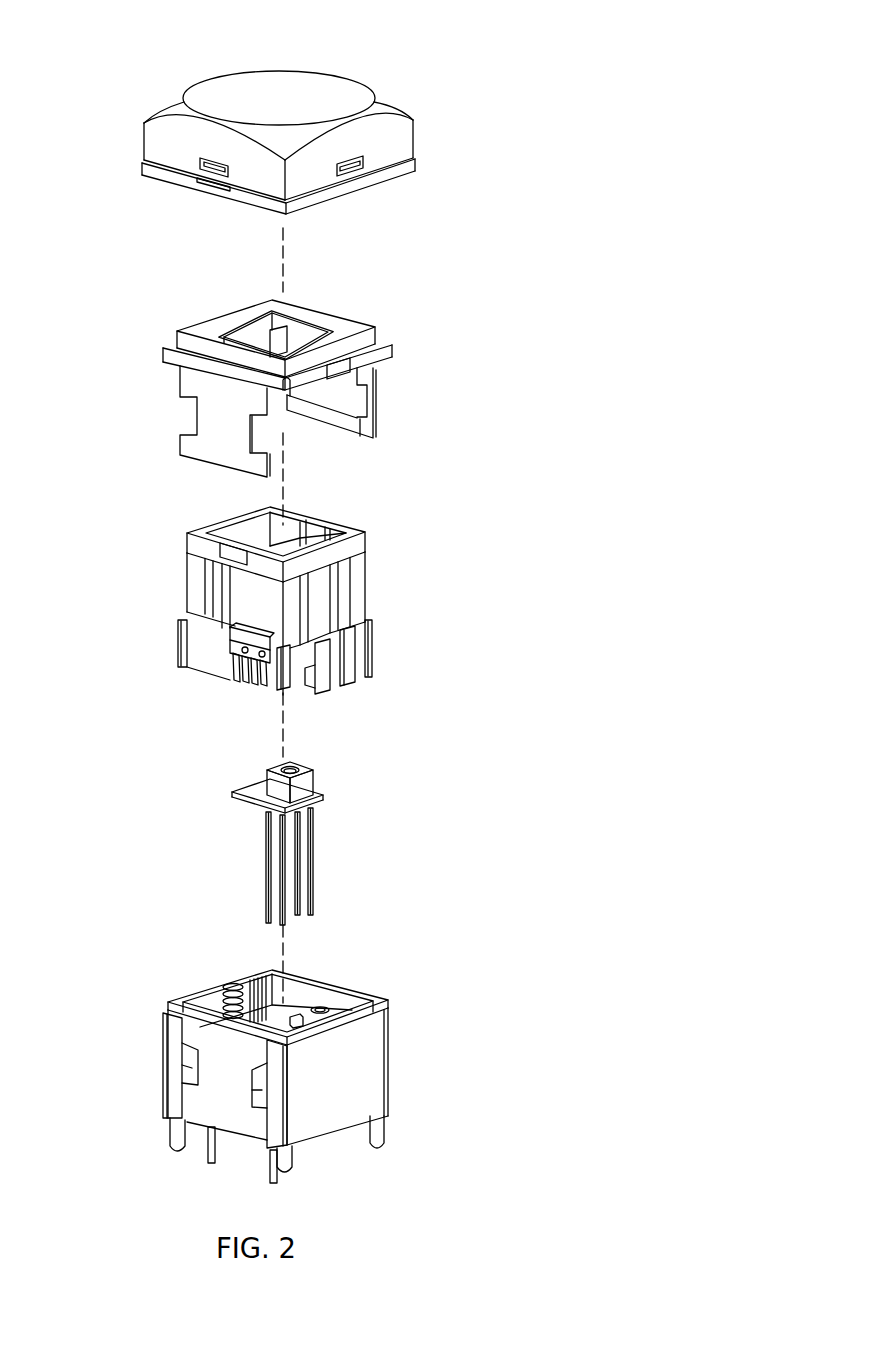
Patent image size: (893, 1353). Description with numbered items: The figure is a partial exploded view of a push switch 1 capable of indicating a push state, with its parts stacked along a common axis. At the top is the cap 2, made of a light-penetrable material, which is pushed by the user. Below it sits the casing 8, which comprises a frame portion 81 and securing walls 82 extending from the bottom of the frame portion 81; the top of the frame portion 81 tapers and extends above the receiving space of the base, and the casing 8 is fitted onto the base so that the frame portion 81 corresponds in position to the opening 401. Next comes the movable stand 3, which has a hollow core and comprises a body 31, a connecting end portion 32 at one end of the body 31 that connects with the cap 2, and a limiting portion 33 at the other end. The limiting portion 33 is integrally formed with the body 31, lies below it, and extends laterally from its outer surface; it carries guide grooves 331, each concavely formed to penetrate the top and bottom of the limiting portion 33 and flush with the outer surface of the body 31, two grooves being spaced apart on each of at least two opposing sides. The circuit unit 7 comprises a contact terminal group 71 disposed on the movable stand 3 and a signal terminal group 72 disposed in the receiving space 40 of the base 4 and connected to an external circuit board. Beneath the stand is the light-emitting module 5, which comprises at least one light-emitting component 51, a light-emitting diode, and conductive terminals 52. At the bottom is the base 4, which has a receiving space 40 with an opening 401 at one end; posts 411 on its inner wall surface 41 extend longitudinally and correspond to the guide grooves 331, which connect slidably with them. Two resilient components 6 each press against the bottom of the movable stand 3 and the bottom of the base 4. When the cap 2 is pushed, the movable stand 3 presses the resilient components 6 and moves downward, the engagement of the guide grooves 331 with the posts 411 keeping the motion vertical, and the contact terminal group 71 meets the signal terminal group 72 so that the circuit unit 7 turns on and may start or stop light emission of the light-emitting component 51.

The push switch 1 is at (481, 65).
The cap 2 is at (230, 97).
The casing 8 is at (429, 342).
The frame portion 81 is at (175, 340).
The securing walls 82 is at (212, 408).
The movable stand 3 is at (383, 535).
The body 31 is at (190, 590).
The connecting end portion 32 is at (198, 547).
The limiting portion 33 is at (178, 632).
The guide grooves 331 is at (295, 671).
The circuit unit 7 is at (186, 706).
The contact terminal group 71 is at (247, 678).
The signal terminal group 72 is at (272, 1175).
The light-emitting module 5 is at (388, 799).
The light-emitting component 51 is at (278, 780).
The conductive terminals 52 is at (283, 858).
The base 4 is at (421, 1012).
The receiving space 40 is at (302, 985).
The opening 401 is at (355, 992).
The inner wall surface 41 is at (248, 983).
The posts 411 is at (262, 982).
The resilient components 6 is at (228, 983).